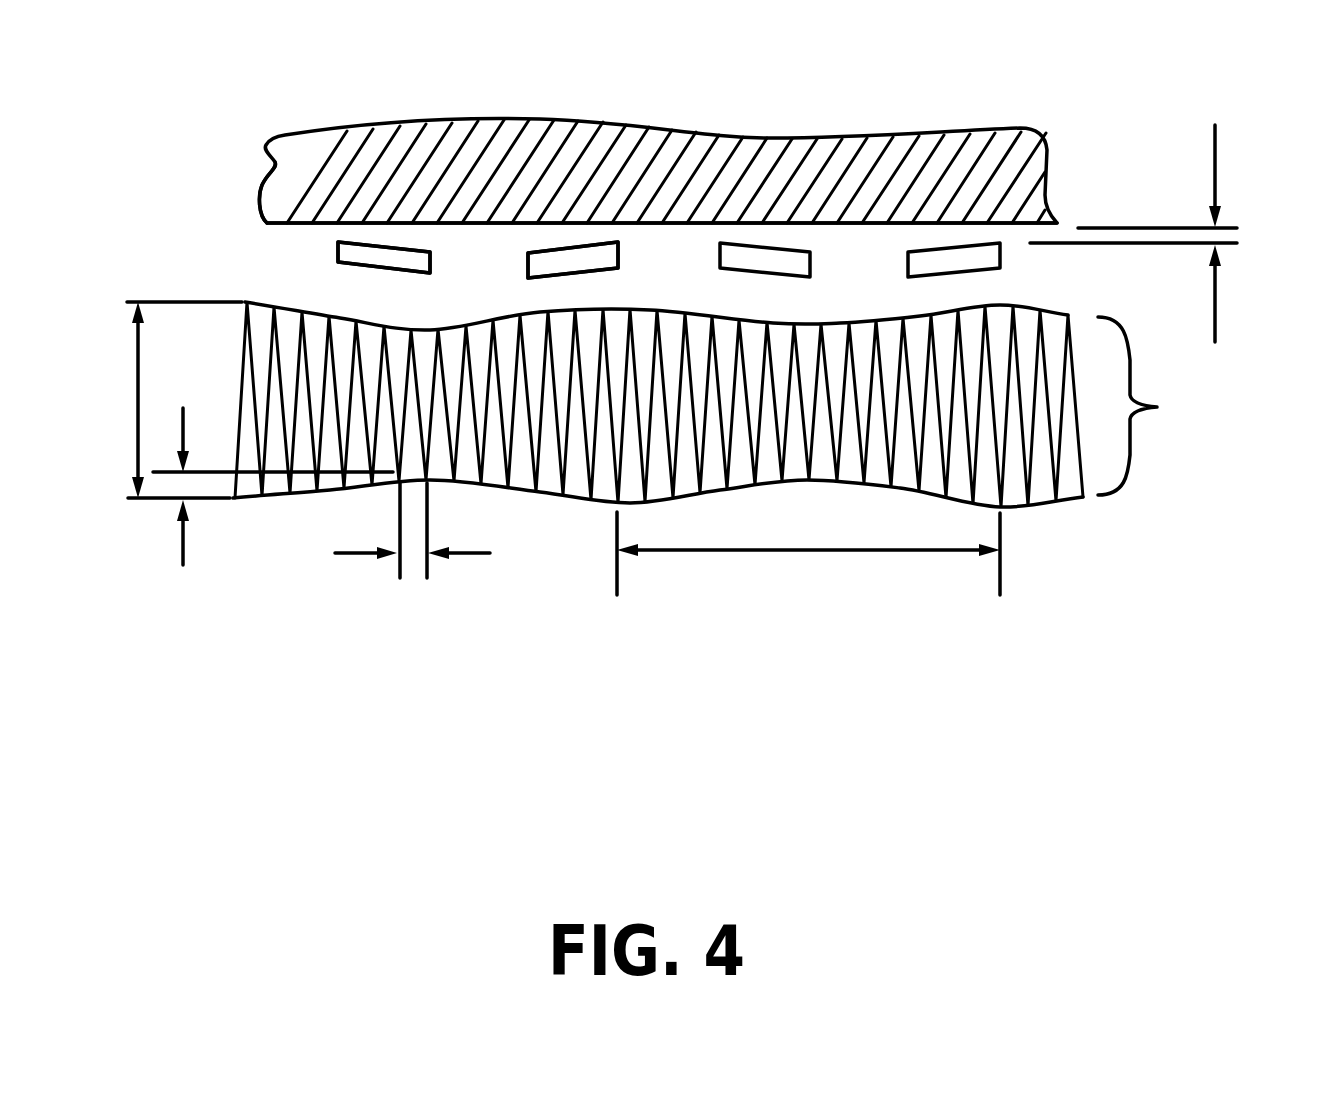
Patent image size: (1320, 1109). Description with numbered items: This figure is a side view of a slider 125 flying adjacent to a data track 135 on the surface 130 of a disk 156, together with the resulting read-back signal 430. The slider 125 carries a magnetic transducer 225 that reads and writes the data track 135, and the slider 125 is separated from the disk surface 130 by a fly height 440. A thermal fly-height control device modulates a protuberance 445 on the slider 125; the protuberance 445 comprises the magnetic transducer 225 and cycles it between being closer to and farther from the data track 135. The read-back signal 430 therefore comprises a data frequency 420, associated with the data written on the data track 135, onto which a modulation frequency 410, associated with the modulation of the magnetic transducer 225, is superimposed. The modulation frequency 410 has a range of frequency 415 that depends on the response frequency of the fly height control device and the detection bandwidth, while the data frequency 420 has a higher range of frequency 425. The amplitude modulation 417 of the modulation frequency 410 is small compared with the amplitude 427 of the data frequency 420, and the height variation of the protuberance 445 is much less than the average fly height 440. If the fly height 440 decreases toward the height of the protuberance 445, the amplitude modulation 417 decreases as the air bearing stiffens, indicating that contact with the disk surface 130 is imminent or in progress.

The disk 156 is at (333, 160).
The data track 135 is at (272, 222).
The disk surface 130 is at (308, 225).
The slider 125 is at (373, 252).
The magnetic transducer 225 is at (433, 253).
The protuberance 445 is at (618, 243).
The modulation frequency 410 is at (1042, 503).
The read-back signal 430 is at (1163, 405).
The data frequency 420 is at (1072, 352).
The fly height 440 is at (1213, 167).
The amplitude of data frequency 427 is at (142, 375).
The amplitude modulation 417 is at (185, 542).
The range of frequency of data frequency 425 is at (468, 555).
The range of frequency of modulation frequency 415 is at (772, 553).